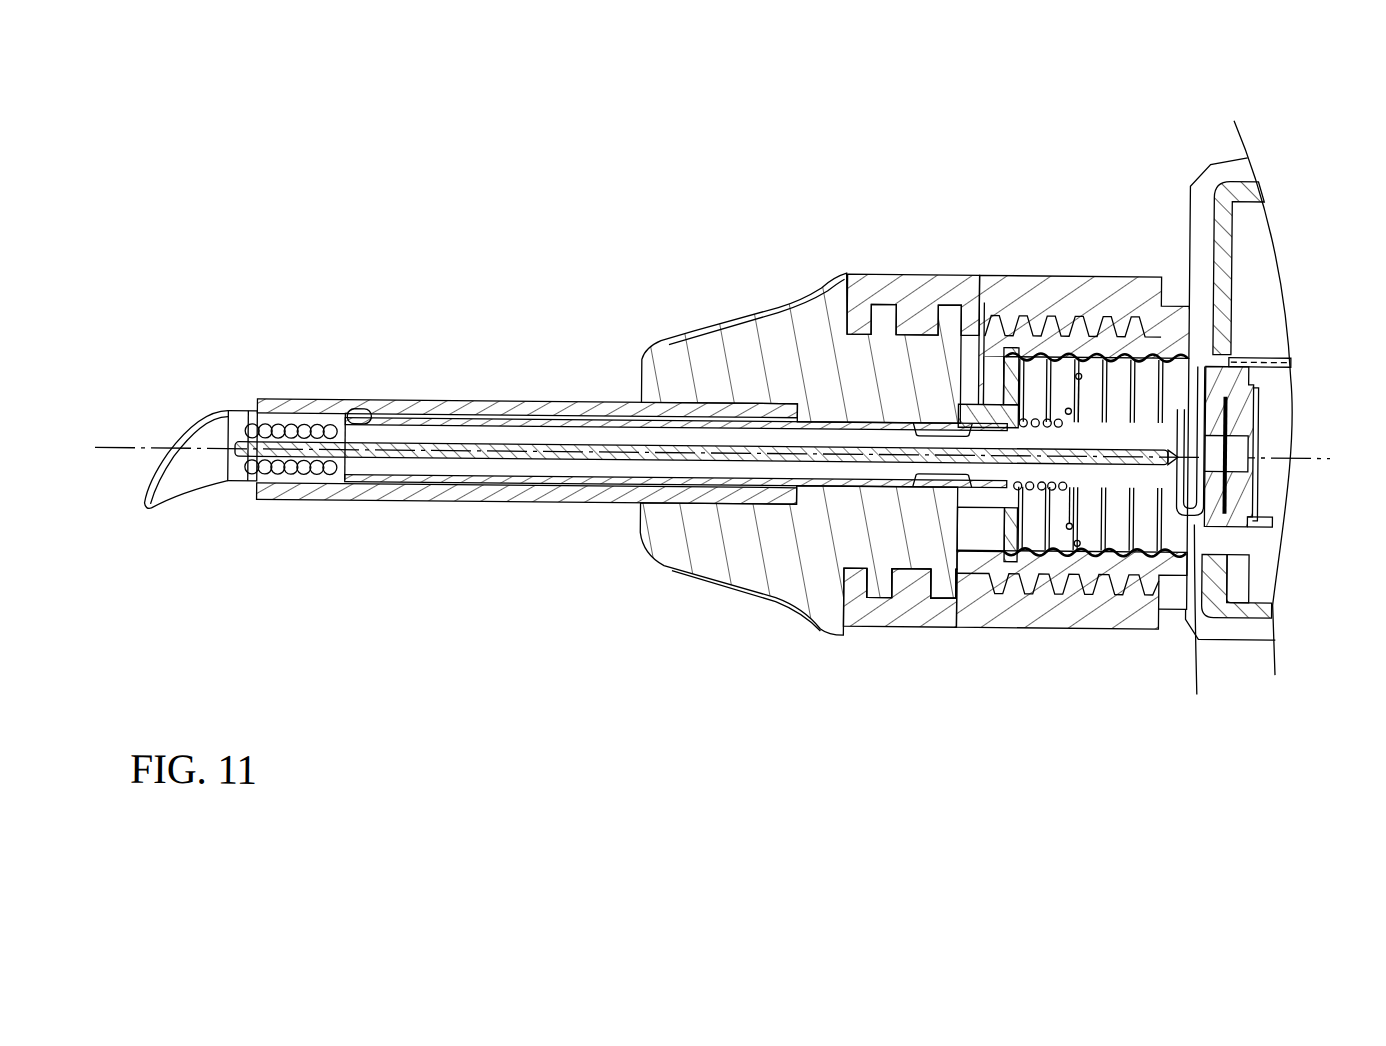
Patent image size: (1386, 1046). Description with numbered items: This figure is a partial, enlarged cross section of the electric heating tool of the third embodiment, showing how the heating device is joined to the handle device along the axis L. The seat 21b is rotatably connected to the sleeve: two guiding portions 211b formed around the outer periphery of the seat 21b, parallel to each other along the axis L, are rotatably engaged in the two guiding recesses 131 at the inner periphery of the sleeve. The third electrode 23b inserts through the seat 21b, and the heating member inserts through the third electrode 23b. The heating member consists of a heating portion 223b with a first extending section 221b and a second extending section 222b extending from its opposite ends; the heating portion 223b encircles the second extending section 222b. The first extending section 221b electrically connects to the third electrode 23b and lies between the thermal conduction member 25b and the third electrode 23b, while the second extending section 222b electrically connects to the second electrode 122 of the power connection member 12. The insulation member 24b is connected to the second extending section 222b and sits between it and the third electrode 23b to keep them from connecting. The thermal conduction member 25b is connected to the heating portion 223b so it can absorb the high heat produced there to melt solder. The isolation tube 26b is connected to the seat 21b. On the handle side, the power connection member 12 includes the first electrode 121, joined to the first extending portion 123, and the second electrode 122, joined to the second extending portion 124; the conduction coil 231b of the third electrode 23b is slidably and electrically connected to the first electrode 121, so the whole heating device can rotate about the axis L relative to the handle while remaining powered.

The power connection member 12 is at (1168, 695).
The first electrode 121 is at (1147, 528).
The second electrode 122 is at (1192, 607).
The first extending portion 123 is at (1268, 354).
The second extending portion 124 is at (1264, 514).
The guiding recesses 131 is at (880, 588).
The seat 21b is at (699, 350).
The guiding portions 211b is at (878, 303).
The first extending section 221b is at (357, 419).
The second extending section 222b is at (485, 452).
The heating portion 223b is at (280, 422).
The third electrode 23b is at (535, 480).
The conduction coil 231b is at (1080, 526).
The insulation member 24b is at (1160, 438).
The thermal conduction member 25b is at (215, 488).
The isolation tube 26b is at (430, 500).
The axis L is at (100, 453).